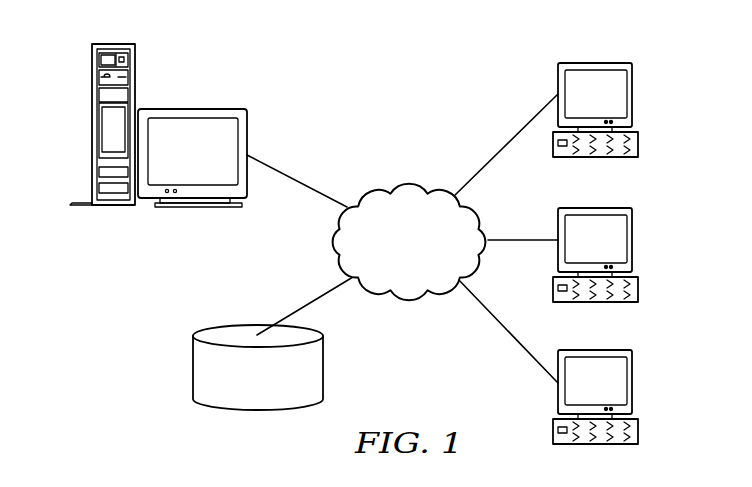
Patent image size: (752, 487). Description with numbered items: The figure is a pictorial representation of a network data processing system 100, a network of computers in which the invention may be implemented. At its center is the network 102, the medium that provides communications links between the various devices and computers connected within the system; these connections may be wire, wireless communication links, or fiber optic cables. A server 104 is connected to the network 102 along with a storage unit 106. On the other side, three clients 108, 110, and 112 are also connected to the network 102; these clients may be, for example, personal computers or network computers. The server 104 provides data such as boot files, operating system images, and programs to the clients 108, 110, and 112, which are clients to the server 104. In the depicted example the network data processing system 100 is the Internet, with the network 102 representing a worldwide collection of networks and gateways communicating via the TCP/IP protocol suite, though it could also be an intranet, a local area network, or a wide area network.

The network data processing system 100 is at (464, 72).
The network 102 is at (375, 192).
The server 104 is at (92, 123).
The storage unit 106 is at (192, 368).
The client 108 is at (635, 95).
The client 110 is at (635, 240).
The client 112 is at (635, 385).